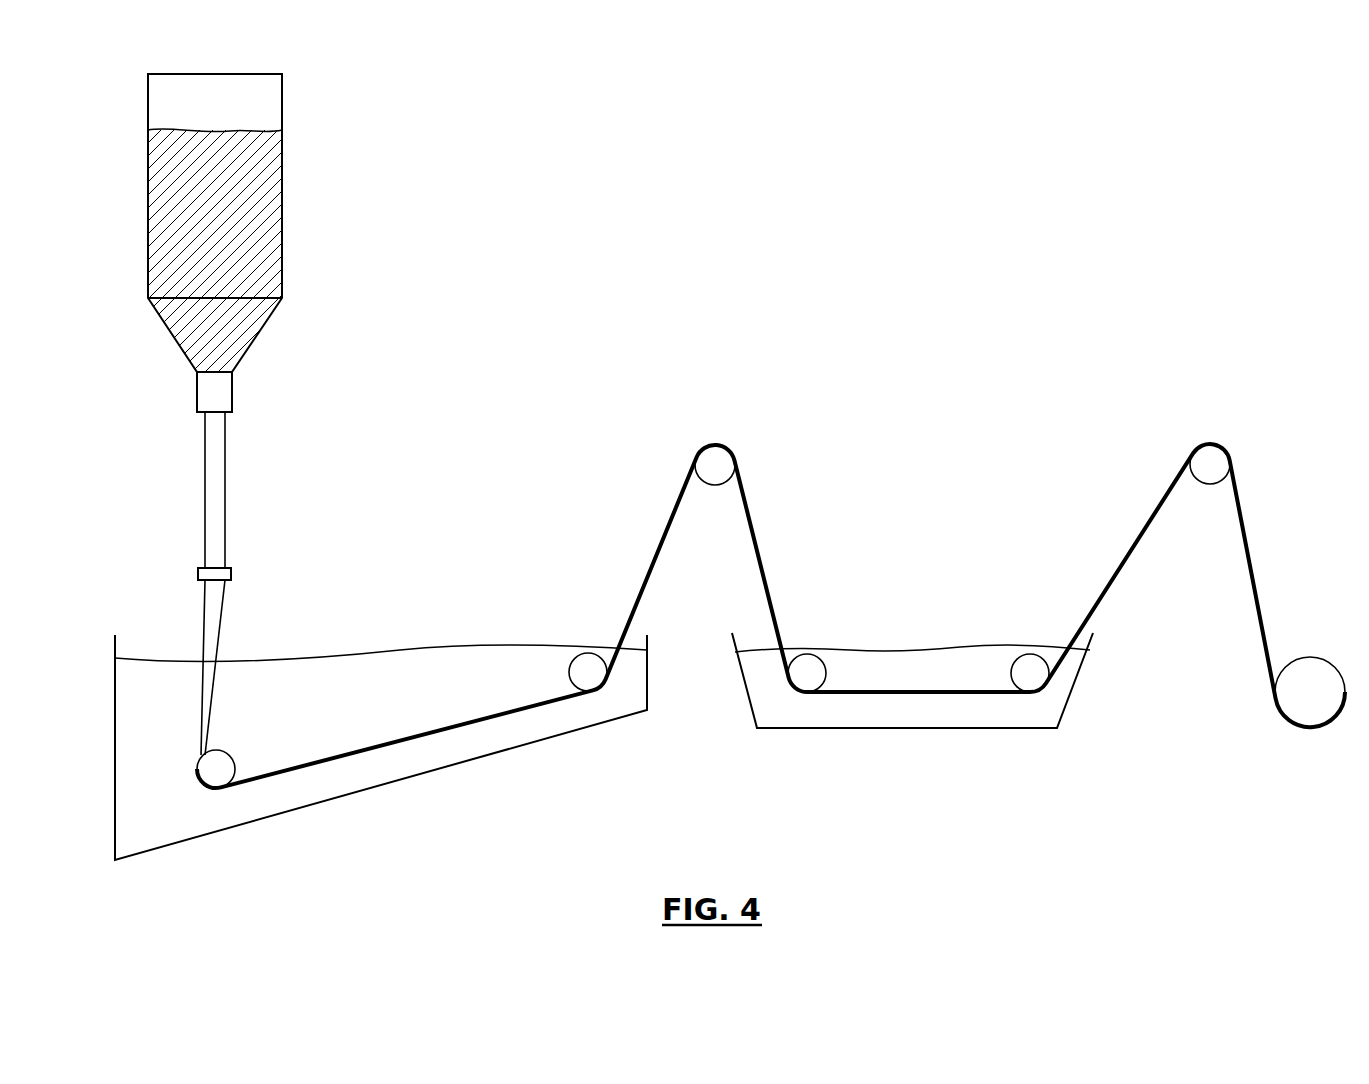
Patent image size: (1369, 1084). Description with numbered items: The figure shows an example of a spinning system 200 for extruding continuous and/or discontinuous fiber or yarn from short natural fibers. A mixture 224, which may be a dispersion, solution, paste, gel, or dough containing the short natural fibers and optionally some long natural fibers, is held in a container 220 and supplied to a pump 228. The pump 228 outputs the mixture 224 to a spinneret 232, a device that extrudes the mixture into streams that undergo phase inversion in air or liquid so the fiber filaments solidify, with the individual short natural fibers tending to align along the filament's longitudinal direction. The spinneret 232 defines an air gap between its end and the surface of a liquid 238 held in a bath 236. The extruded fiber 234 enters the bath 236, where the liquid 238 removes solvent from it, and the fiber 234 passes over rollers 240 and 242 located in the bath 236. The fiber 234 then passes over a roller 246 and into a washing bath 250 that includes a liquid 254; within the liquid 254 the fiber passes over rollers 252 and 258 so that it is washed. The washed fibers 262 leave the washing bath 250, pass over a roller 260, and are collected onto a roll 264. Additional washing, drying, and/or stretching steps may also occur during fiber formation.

The spinning system 200 is at (838, 298).
The container 220 is at (283, 186).
The mixture 224 is at (268, 238).
The pump 228 is at (233, 403).
The spinneret 232 is at (233, 574).
The fiber 234 is at (243, 614).
The bath 236 is at (115, 700).
The liquid 238 is at (432, 641).
The roller 240 is at (232, 752).
The roller 242 is at (588, 652).
The roller 246 is at (715, 444).
The washing bath 250 is at (910, 729).
The roller 252 is at (809, 653).
The liquid 254 is at (940, 645).
The roller 258 is at (1025, 653).
The roller 260 is at (1210, 443).
The washed fibers 262 is at (1131, 548).
The roll 264 is at (1306, 657).